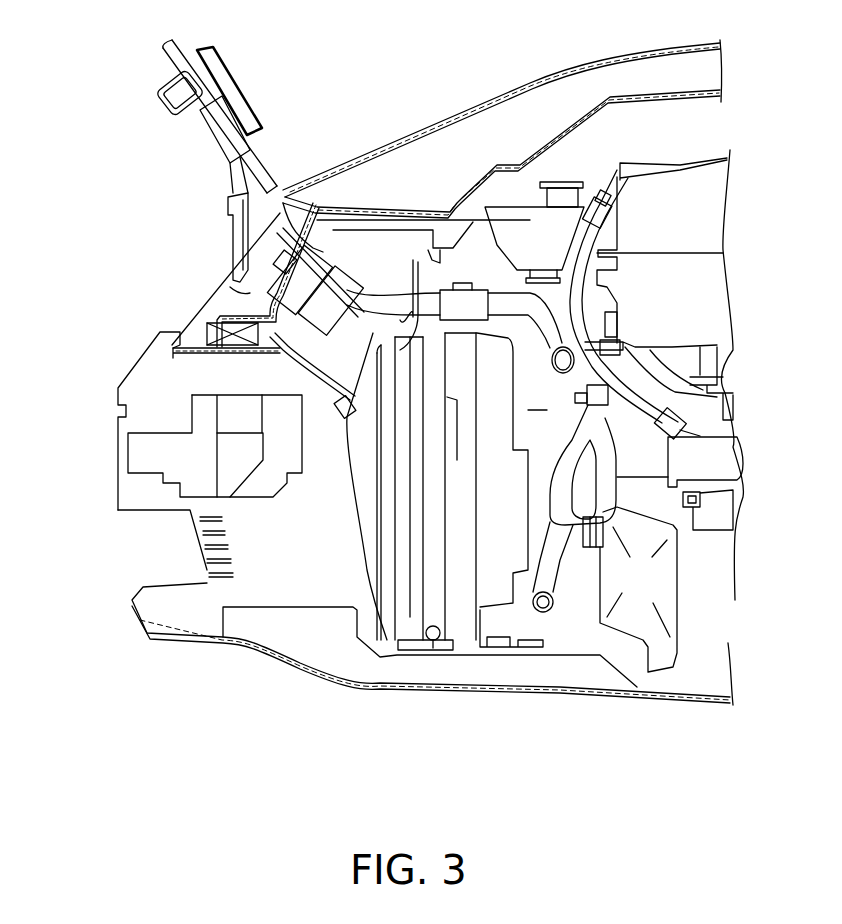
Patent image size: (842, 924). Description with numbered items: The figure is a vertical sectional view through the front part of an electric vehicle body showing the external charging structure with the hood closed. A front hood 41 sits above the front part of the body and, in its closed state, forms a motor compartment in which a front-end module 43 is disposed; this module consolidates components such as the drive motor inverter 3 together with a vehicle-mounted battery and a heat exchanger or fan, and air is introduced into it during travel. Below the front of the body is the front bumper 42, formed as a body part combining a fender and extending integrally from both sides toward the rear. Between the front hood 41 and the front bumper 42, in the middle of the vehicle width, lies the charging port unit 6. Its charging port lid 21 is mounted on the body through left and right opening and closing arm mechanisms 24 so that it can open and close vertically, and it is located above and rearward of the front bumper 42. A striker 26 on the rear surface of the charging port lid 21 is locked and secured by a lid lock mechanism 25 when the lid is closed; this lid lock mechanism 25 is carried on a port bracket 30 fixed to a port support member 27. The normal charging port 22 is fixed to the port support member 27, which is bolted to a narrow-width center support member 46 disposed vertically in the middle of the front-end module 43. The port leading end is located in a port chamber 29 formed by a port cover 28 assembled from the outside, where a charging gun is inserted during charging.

The drive motor inverter 3 is at (668, 227).
The charging port unit 6 is at (166, 203).
The charging port lid 21 is at (258, 118).
The normal charging port 22 is at (318, 205).
The opening and closing arm mechanism 24 is at (238, 207).
The lid lock mechanism 25 is at (232, 345).
The striker 26 is at (160, 110).
The port support member 27 is at (305, 360).
The port cover 28 is at (233, 313).
The port chamber 29 is at (248, 294).
The port bracket 30 is at (213, 353).
The front hood 41 is at (560, 72).
The front bumper 42 is at (118, 458).
The front-end module 43 is at (497, 612).
The center support member 46 is at (350, 487).